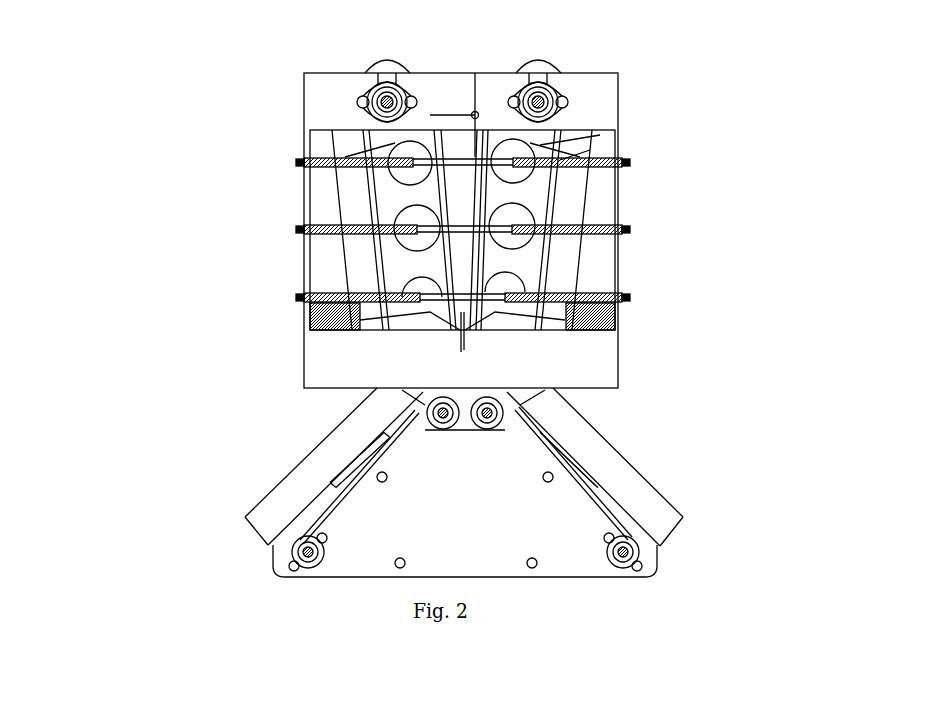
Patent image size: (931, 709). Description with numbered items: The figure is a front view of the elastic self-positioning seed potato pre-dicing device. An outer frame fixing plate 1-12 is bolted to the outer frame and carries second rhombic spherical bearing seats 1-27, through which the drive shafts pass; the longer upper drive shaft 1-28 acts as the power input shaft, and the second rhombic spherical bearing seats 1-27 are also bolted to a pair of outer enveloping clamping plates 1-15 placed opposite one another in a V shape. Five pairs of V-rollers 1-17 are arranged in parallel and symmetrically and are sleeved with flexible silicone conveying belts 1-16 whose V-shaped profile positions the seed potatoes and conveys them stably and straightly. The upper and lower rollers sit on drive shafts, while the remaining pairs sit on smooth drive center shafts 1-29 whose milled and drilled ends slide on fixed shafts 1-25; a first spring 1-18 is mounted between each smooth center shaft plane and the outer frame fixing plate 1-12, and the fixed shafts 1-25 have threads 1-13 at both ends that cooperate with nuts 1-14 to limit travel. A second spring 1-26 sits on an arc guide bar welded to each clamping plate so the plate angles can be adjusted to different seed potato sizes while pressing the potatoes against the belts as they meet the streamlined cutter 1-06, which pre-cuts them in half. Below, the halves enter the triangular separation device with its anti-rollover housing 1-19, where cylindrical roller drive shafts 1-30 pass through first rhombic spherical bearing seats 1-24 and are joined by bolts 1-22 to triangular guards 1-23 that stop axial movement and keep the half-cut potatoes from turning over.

The outer frame fixing plate 1-12 is at (313, 113).
The drive shaft 1-28 is at (355, 97).
The second rhombic spherical bearing seat 1-27 is at (563, 95).
The outer enveloping clamping plate 1-15 is at (567, 140).
The first spring 1-18 is at (623, 163).
The flexible silicone conveying belt 1-16 is at (565, 193).
The thread 1-13 is at (298, 230).
The nut 1-14 is at (298, 233).
The V-roller 1-17 is at (408, 222).
The smooth drive center shaft 1-29 is at (540, 235).
The fixed shaft 1-25 is at (307, 323).
The second spring 1-26 is at (612, 322).
The streamlined cutter 1-06 is at (466, 338).
The bolt 1-22 is at (245, 518).
The anti-rollover housing 1-19 is at (610, 465).
The triangular guard 1-23 is at (575, 497).
The first rhombic spherical bearing seat 1-24 is at (420, 435).
The cylindrical roller drive shaft 1-30 is at (417, 415).